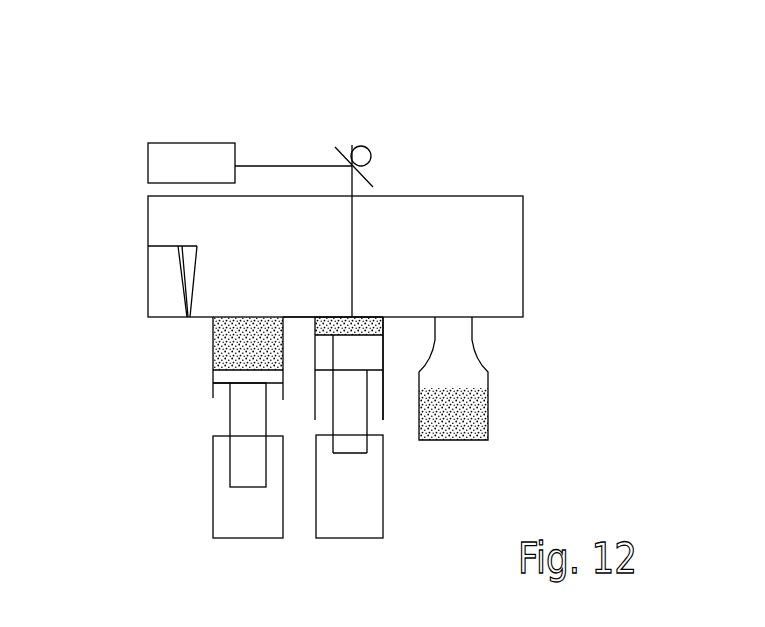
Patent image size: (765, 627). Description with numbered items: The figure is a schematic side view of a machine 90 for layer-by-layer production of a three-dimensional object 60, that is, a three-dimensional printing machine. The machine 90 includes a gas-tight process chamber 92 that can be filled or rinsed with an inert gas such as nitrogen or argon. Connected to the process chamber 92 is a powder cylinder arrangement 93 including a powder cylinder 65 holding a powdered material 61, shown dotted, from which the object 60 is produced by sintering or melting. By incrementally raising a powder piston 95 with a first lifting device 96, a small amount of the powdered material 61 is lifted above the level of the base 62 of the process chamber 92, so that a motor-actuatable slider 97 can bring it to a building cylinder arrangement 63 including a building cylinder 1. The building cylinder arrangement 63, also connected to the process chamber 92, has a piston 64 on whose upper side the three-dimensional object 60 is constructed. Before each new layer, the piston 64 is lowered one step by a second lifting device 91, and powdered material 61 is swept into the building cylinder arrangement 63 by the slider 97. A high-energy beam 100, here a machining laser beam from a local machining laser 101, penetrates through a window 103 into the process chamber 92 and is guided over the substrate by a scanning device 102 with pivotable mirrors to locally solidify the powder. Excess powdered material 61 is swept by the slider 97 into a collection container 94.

The machine 90 is at (315, 276).
The process chamber 92 is at (479, 195).
The machining laser 101 is at (160, 163).
The high-energy beam 100 is at (265, 163).
The scanning device 102 is at (348, 147).
The window 103 is at (375, 195).
The slider 97 is at (188, 254).
The base 62 is at (303, 310).
The powdered material 61 is at (213, 333).
The three-dimensional object 60 is at (360, 320).
The building cylinder arrangement 63 is at (397, 367).
The building cylinder 1 is at (383, 350).
The piston 64 is at (325, 340).
The second lifting device 91 is at (373, 490).
The powder cylinder 65 is at (212, 362).
The powder cylinder arrangement 93 is at (200, 384).
The powder piston 95 is at (227, 385).
The first lifting device 96 is at (217, 477).
The collection container 94 is at (480, 378).